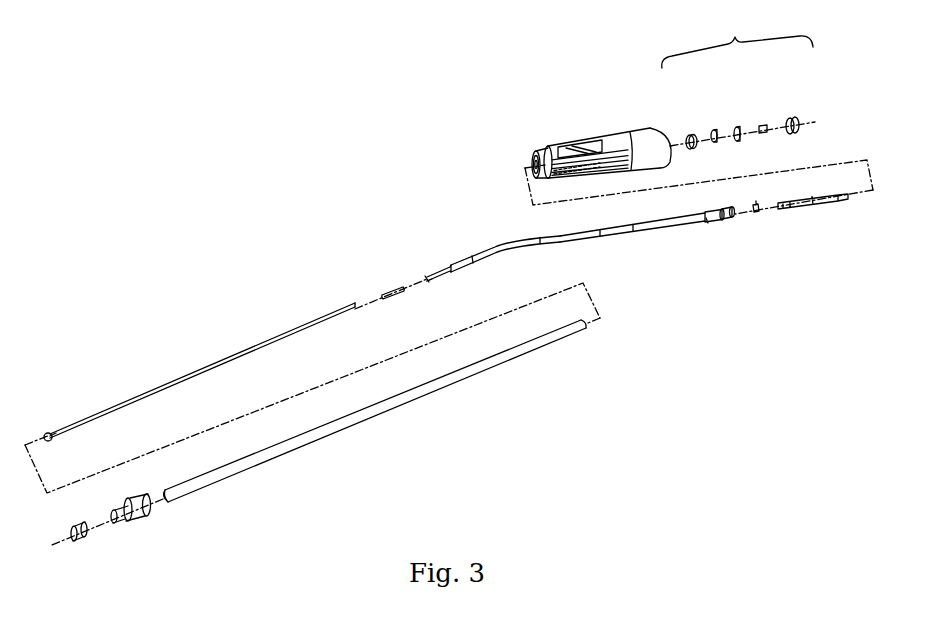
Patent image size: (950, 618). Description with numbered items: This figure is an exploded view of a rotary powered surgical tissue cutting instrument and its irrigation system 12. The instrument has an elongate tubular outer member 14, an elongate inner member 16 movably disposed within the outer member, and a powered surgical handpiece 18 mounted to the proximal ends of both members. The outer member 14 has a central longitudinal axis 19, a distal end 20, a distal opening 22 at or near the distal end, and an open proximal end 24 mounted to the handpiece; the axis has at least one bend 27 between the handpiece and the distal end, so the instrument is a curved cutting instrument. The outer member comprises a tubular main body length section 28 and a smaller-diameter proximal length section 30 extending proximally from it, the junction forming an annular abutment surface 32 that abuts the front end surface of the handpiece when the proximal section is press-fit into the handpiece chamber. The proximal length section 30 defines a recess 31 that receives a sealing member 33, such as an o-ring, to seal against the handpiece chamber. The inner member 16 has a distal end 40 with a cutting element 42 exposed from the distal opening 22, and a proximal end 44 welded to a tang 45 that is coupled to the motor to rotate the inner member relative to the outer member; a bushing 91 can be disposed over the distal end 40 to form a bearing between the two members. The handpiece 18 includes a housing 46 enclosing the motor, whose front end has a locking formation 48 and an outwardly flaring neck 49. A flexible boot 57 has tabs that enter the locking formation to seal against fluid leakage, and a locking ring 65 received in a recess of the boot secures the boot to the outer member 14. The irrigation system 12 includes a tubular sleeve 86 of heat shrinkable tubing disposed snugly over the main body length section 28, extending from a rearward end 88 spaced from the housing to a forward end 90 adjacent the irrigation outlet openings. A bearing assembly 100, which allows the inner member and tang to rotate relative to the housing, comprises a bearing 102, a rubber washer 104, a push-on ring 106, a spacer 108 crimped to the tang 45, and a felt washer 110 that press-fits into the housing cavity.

The irrigation system 12 is at (491, 243).
The elongate tubular outer member 14 is at (609, 253).
The elongate inner member 16 is at (262, 338).
The powered surgical handpiece 18 is at (605, 128).
The central longitudinal axis 19 is at (425, 277).
The distal end 20 is at (447, 280).
The distal opening 22 is at (427, 282).
The open proximal end 24 is at (719, 231).
The bend 27 is at (507, 251).
The main body length section 28 is at (625, 233).
The proximal length section 30 is at (724, 212).
The recess 31 is at (728, 223).
The abutment surface 32 is at (708, 224).
The sealing member 33 is at (757, 212).
The distal end 40 is at (54, 426).
The cutting element 42 is at (45, 433).
The proximal end 44 is at (355, 295).
The tang 45 is at (796, 206).
The housing 46 is at (652, 170).
The locking formation 48 is at (531, 144).
The neck 49 is at (557, 140).
The boot 57 is at (138, 499).
The locking ring 65 is at (74, 527).
The tubular sleeve 86 is at (419, 399).
The rearward end 88 is at (587, 327).
The forward end 90 is at (167, 501).
The bushing 91 is at (392, 297).
The bearing assembly 100 is at (735, 37).
The bearing 102 is at (690, 135).
The rubber washer 104 is at (714, 130).
The push-on ring 106 is at (737, 127).
The spacer 108 is at (763, 125).
The felt washer 110 is at (791, 118).